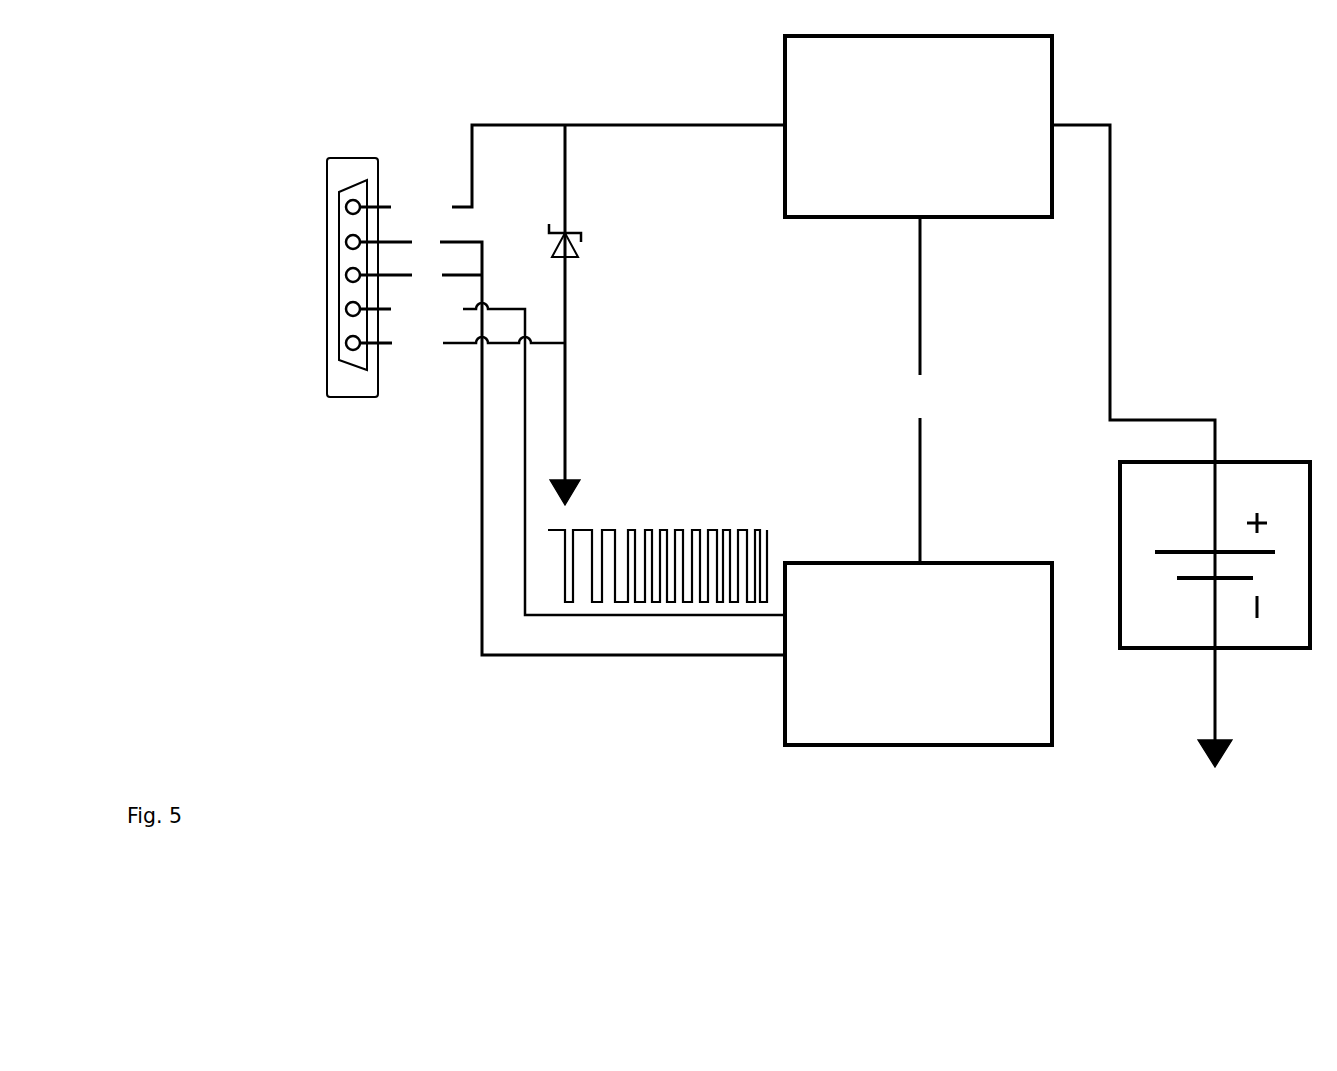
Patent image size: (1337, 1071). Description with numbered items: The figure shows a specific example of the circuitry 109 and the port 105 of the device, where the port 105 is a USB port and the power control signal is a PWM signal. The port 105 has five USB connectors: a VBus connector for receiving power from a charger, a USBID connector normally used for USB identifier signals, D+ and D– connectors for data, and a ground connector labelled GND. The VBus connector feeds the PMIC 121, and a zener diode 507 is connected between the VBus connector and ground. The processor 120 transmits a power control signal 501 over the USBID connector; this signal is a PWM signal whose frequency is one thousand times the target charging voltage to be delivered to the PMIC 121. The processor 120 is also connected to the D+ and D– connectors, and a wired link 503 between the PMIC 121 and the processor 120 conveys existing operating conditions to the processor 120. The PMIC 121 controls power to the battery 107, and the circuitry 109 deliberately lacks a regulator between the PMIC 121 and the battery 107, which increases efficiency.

The port 105 is at (345, 382).
The battery 107 is at (1118, 522).
The circuitry 109 is at (330, 648).
The processor 120 is at (943, 702).
The PMIC 121 is at (943, 163).
The power control signal 501 is at (708, 530).
The wired link 503 is at (943, 412).
The zener diode 507 is at (577, 248).